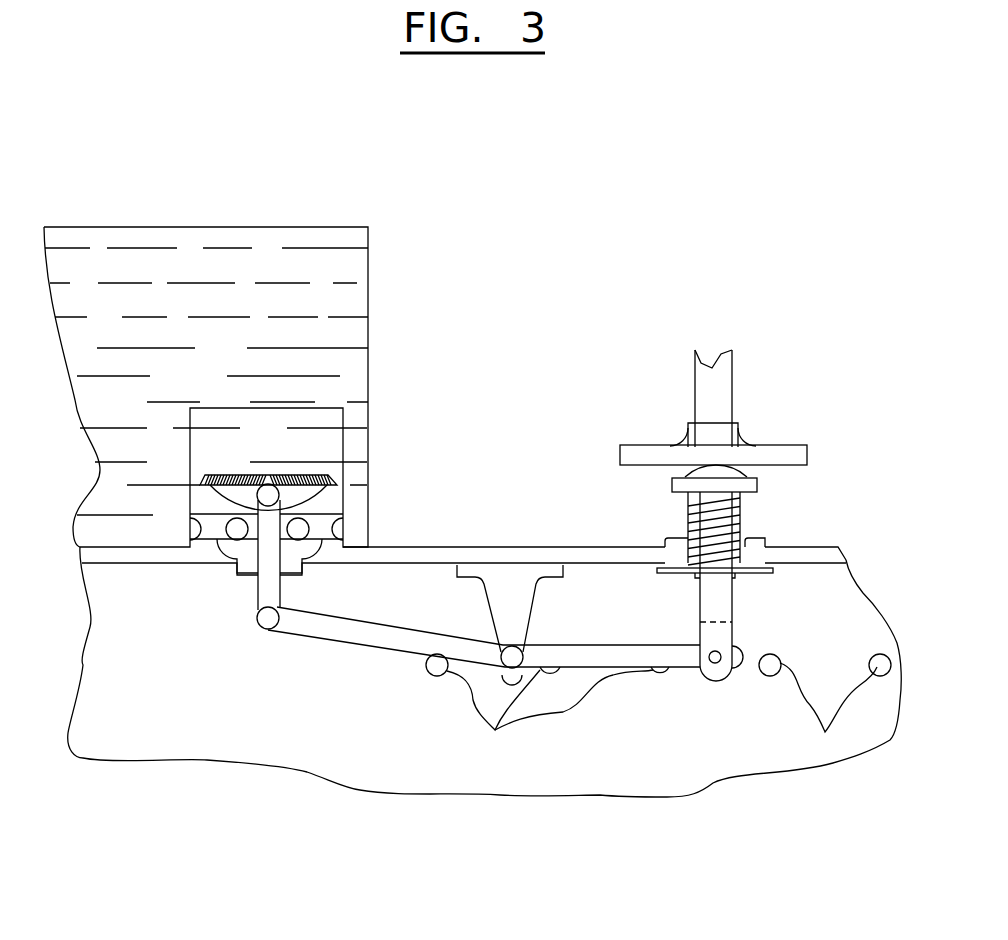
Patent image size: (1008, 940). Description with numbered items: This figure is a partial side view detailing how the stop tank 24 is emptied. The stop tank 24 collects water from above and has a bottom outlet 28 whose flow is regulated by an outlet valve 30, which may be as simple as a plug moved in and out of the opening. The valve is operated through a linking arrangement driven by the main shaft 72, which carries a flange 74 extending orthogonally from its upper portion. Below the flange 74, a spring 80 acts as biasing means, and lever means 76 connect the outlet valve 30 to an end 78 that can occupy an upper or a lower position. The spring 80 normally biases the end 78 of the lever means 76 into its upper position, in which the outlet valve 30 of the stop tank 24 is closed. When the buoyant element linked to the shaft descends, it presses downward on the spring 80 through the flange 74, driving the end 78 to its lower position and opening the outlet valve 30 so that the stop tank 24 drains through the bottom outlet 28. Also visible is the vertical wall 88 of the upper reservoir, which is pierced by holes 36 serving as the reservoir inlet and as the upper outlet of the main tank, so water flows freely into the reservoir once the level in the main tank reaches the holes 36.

The stop tank 24 is at (212, 233).
The bottom outlet 28 is at (235, 555).
The outlet valve 30 is at (210, 486).
The holes 36 is at (658, 669).
The main shaft 72 is at (725, 372).
The flange 74 is at (782, 452).
The lever means 76 is at (323, 628).
The end 78 is at (710, 662).
The spring 80 is at (737, 502).
The vertical wall 88 is at (855, 622).